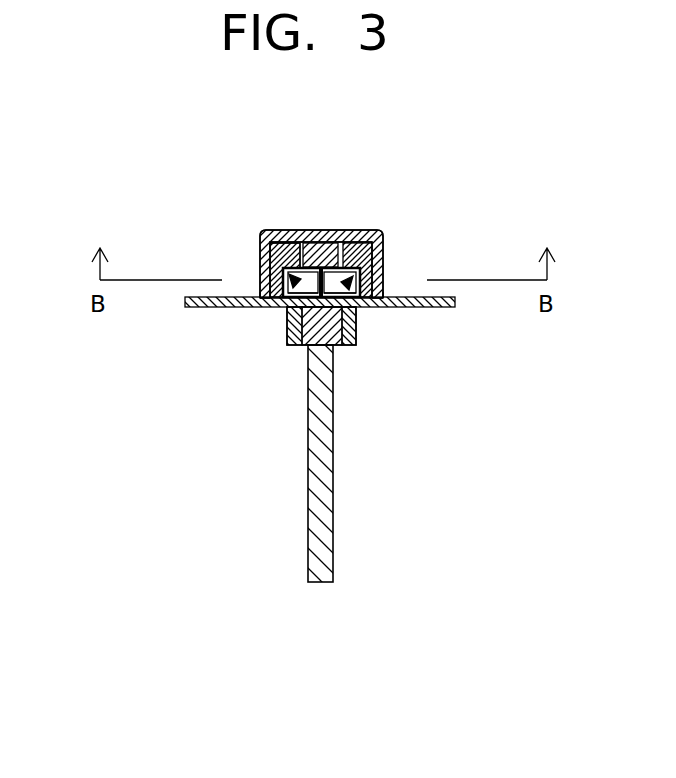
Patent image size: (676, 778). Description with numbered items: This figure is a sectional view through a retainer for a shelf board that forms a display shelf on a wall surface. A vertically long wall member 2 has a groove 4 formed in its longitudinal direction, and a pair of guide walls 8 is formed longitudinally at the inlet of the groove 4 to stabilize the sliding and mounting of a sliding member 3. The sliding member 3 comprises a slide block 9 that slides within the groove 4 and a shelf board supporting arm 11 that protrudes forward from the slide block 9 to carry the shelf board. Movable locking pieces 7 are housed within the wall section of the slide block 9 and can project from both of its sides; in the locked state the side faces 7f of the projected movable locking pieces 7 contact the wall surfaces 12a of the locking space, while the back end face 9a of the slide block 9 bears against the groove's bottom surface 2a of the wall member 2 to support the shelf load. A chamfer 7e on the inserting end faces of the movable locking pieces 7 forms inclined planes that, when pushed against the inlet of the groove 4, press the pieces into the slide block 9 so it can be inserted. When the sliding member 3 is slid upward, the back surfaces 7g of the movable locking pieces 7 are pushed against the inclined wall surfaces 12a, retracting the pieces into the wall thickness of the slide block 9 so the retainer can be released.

The wall member 2 is at (268, 247).
The groove's bottom surface 2a is at (303, 232).
The sliding member 3 is at (358, 432).
The groove 4 is at (333, 347).
The movable locking pieces 7 is at (261, 241).
The chamfer 7e is at (276, 232).
The side faces 7f is at (262, 292).
The back surfaces 7g is at (262, 302).
The guide walls 8 is at (287, 338).
The slide block 9 is at (352, 232).
The back end face 9a is at (327, 232).
The shelf board supporting arm 11 is at (333, 465).
The wall surfaces 12a is at (266, 278).